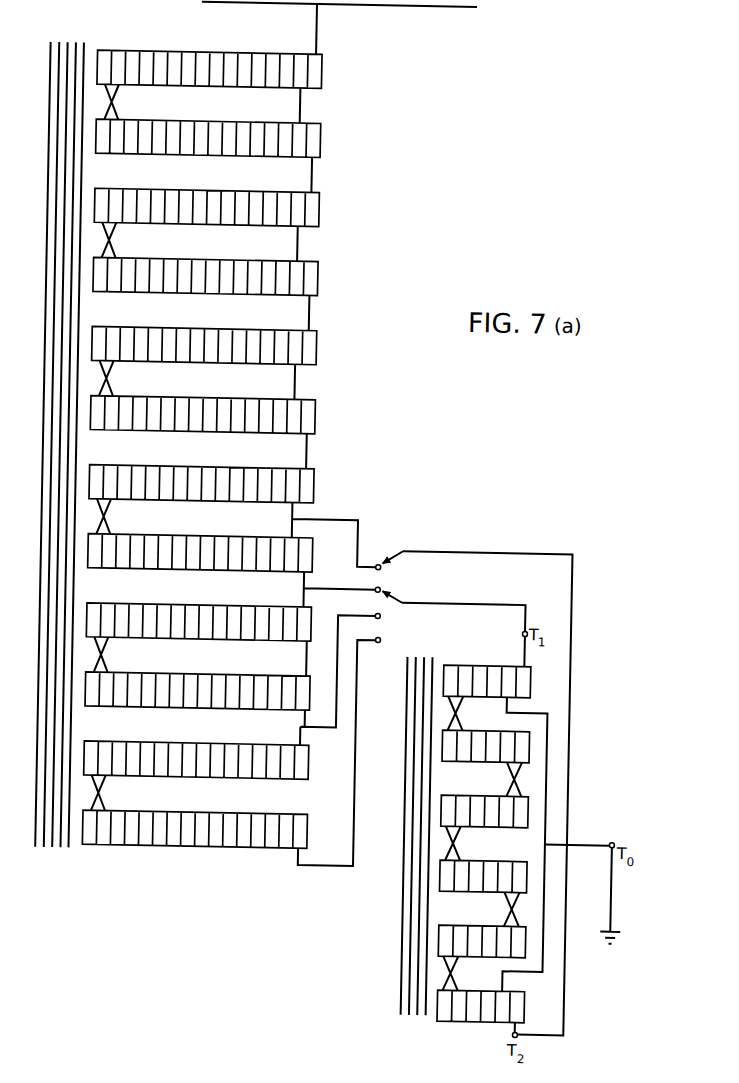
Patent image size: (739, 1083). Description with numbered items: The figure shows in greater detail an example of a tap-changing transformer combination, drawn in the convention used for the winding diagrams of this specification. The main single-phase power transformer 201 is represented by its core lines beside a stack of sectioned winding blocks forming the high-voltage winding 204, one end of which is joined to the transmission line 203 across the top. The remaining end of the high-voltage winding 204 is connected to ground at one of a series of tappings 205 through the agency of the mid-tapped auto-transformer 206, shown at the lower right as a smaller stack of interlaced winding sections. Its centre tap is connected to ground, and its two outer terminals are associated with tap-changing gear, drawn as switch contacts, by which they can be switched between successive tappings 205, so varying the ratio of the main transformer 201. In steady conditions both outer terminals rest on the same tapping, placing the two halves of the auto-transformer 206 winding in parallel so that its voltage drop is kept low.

The main single-phase power transformer 201 is at (80, 881).
The transmission line 203 is at (420, 8).
The high-voltage winding 204 is at (196, 458).
The tappings 205 is at (385, 612).
The mid-tapped auto-transformer 206 is at (440, 1046).